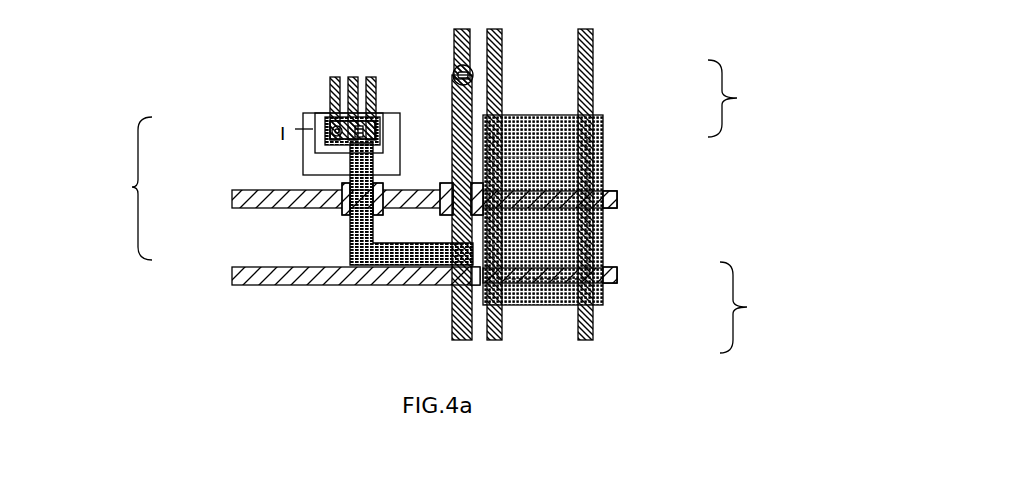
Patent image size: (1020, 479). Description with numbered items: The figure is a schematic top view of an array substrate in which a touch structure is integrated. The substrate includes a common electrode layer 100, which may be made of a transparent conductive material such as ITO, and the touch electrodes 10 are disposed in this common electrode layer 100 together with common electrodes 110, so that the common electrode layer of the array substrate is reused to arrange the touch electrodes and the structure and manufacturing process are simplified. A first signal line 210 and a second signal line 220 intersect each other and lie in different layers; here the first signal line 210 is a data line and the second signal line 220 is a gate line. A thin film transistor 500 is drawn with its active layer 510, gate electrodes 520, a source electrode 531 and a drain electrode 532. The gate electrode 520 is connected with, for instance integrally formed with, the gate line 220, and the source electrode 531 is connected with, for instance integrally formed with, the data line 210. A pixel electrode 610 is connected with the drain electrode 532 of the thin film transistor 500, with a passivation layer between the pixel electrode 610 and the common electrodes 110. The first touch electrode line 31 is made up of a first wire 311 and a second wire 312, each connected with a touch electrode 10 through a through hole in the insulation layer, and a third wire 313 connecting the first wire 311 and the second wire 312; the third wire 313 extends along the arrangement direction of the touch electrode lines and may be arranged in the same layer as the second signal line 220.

The touch electrode 10 is at (603, 133).
The first touch electrode line 31 is at (753, 307).
The common electrode layer 100 is at (750, 98).
The common electrode 110 is at (400, 133).
The first signal line 210 is at (457, 30).
The second signal line 220 is at (617, 200).
The first wire 311 is at (502, 335).
The second wire 312 is at (593, 317).
The third wire 313 is at (617, 273).
The thin film transistor 500 is at (117, 188).
The active layer 510 is at (357, 248).
The gate electrode 520 is at (343, 212).
The source electrode 531 is at (452, 76).
The drain electrode 532 is at (327, 130).
The pixel electrode 610 is at (330, 77).